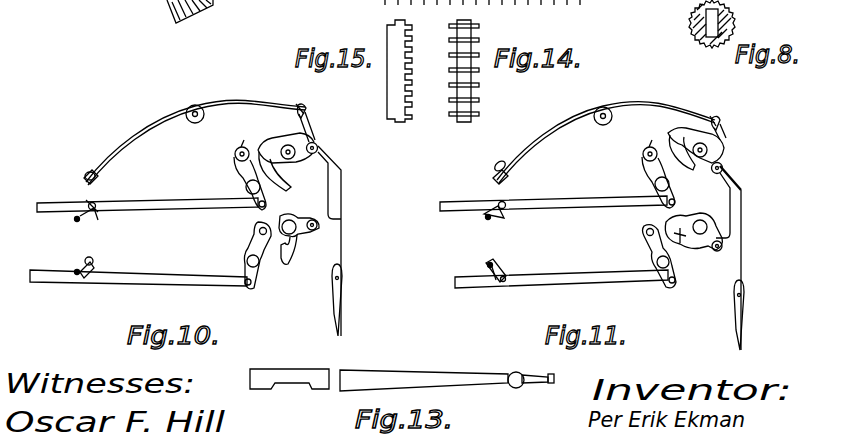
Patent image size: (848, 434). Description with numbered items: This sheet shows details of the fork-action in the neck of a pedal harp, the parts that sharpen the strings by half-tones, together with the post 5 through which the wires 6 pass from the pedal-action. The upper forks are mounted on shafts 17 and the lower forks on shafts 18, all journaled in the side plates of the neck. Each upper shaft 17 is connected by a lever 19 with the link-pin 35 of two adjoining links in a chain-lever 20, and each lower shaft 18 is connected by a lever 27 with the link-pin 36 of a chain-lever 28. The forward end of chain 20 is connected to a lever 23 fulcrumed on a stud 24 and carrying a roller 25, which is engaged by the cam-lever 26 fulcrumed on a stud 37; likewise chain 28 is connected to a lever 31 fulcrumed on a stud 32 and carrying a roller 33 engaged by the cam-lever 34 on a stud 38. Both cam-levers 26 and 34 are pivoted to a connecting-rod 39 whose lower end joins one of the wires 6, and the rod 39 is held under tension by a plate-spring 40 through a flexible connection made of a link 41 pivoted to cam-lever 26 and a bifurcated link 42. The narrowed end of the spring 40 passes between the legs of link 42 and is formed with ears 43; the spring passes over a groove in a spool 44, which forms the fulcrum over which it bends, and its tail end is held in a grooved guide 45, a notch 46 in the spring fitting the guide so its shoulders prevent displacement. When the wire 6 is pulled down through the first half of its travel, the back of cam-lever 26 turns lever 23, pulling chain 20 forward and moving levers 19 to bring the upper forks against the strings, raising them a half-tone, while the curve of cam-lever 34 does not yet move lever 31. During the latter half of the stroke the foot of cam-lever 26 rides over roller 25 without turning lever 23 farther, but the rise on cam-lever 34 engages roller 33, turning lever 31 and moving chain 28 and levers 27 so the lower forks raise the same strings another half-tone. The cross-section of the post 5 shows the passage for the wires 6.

In FIG. 8, the post 5 is at (738, 20).
In FIG. 10, the wire 6 is at (341, 318).
In FIG. 11, the wire 6 is at (746, 350).
In FIG. 10, the shaft 17 is at (73, 220).
In FIG. 11, the shaft 17 is at (484, 219).
In FIG. 10, the shaft 18 is at (85, 260).
In FIG. 11, the shaft 18 is at (488, 271).
In FIG. 10, the lever 19 is at (96, 212).
In FIG. 11, the lever 19 is at (502, 212).
In FIG. 10, the chain-lever 20 is at (170, 208).
In FIG. 11, the chain-lever 20 is at (588, 208).
In FIG. 10, the lever 23 is at (234, 170).
In FIG. 11, the lever 23 is at (642, 172).
In FIG. 10, the stud 24 is at (245, 187).
In FIG. 11, the stud 24 is at (654, 186).
In FIG. 10, the roller 25 is at (242, 146).
In FIG. 11, the roller 25 is at (652, 146).
In FIG. 10, the cam-lever 26 is at (263, 146).
In FIG. 11, the cam-lever 26 is at (690, 128).
In FIG. 10, the lever 27 is at (90, 270).
In FIG. 11, the lever 27 is at (494, 283).
In FIG. 10, the chain-lever 28 is at (188, 280).
In FIG. 11, the chain-lever 28 is at (526, 280).
In FIG. 10, the lever 31 is at (254, 276).
In FIG. 11, the lever 31 is at (679, 277).
In FIG. 10, the stud 32 is at (246, 261).
In FIG. 11, the stud 32 is at (655, 262).
In FIG. 10, the roller 33 is at (255, 230).
In FIG. 11, the roller 33 is at (643, 230).
In FIG. 10, the cam-lever 34 is at (284, 246).
In FIG. 11, the cam-lever 34 is at (683, 240).
In FIG. 10, the link-pin 35 is at (96, 202).
In FIG. 11, the link-pin 35 is at (504, 200).
In FIG. 10, the link-pin 36 is at (74, 277).
In FIG. 11, the link-pin 36 is at (505, 272).
In FIG. 10, the stud 37 is at (288, 144).
In FIG. 11, the stud 37 is at (697, 158).
In FIG. 10, the stud 38 is at (292, 233).
In FIG. 11, the stud 38 is at (702, 220).
In FIG. 10, the connecting-rod 39 is at (344, 222).
In FIG. 11, the connecting-rod 39 is at (734, 232).
In FIG. 10, the spring 40 is at (150, 123).
In FIG. 11, the spring 40 is at (630, 104).
In FIG. 13, the spring 40 is at (418, 372).
In FIG. 10, the link 41 is at (319, 138).
In FIG. 11, the link 41 is at (732, 142).
In FIG. 10, the bifurcated link 42 is at (306, 109).
In FIG. 11, the bifurcated link 42 is at (722, 124).
In FIG. 10, the ears 43 is at (300, 106).
In FIG. 11, the ears 43 is at (716, 118).
In FIG. 13, the ears 43 is at (516, 372).
In FIG. 10, the spool 44 is at (198, 107).
In FIG. 14, the spool 44 is at (466, 56).
In FIG. 11, the spool 44 is at (612, 92).
In FIG. 10, the guide 45 is at (90, 170).
In FIG. 15, the guide 45 is at (408, 56).
In FIG. 11, the guide 45 is at (504, 160).
In FIG. 10, the notch 46 is at (96, 172).
In FIG. 11, the notch 46 is at (508, 165).
In FIG. 13, the notch 46 is at (304, 390).